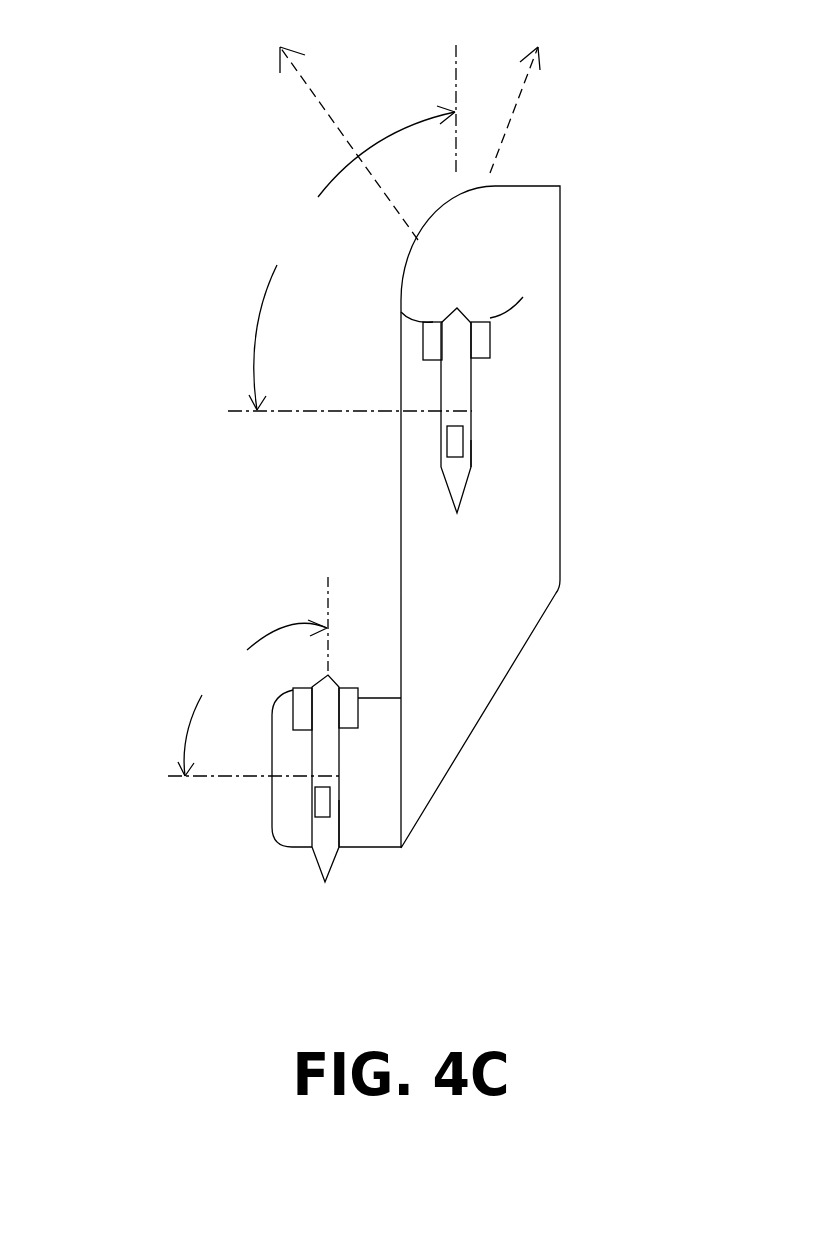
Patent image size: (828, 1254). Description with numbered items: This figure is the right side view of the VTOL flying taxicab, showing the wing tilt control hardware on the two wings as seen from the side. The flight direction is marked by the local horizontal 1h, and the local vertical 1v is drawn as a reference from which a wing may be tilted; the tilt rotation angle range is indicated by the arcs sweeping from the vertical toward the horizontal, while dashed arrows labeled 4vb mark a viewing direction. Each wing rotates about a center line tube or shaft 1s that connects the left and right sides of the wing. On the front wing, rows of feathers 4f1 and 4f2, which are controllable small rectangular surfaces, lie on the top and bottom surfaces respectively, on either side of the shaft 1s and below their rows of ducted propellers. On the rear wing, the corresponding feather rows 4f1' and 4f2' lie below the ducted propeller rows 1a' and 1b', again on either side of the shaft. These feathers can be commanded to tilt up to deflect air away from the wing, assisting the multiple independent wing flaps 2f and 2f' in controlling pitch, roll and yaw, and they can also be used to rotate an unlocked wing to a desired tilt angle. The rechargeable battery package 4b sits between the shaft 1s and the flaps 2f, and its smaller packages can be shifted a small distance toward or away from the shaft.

The center line tube 1s is at (472, 412).
The local horizontal flight direction 1h is at (391, 343).
The local vertical direction 1v is at (230, 412).
The viewing direction 4vb is at (398, 127).
The two rows ducted-propellers above leading edge rear-wing 1a' is at (313, 478).
The ducted row propellers below rear-wing 1b' is at (487, 465).
The controllable small rectangular surfaces (feathers) on top surface of the first w 4f1 is at (376, 352).
The controllable small rectangular surfaces (feathers) on bottom surface of wing 1w 4f2 is at (410, 595).
The controllable small rectangular surfaces (feathers) on top surface of the second 4f1' is at (369, 717).
The controllable small rectangular surfaces (feathers) on bottom surface of wing 1w' 4f2' is at (479, 643).
The multiple independent wing flaps 2f is at (404, 410).
The wing flaps of rear wing 2f' is at (293, 786).
The wing rechargeable battery package 4b is at (450, 440).